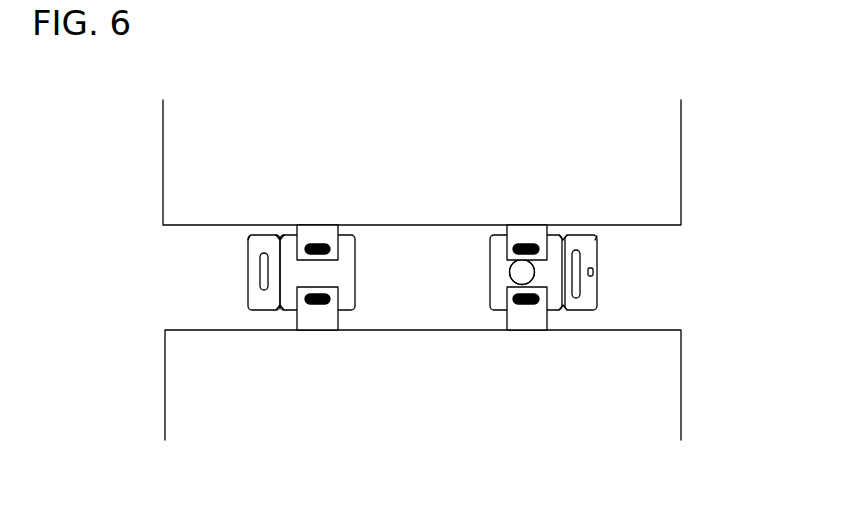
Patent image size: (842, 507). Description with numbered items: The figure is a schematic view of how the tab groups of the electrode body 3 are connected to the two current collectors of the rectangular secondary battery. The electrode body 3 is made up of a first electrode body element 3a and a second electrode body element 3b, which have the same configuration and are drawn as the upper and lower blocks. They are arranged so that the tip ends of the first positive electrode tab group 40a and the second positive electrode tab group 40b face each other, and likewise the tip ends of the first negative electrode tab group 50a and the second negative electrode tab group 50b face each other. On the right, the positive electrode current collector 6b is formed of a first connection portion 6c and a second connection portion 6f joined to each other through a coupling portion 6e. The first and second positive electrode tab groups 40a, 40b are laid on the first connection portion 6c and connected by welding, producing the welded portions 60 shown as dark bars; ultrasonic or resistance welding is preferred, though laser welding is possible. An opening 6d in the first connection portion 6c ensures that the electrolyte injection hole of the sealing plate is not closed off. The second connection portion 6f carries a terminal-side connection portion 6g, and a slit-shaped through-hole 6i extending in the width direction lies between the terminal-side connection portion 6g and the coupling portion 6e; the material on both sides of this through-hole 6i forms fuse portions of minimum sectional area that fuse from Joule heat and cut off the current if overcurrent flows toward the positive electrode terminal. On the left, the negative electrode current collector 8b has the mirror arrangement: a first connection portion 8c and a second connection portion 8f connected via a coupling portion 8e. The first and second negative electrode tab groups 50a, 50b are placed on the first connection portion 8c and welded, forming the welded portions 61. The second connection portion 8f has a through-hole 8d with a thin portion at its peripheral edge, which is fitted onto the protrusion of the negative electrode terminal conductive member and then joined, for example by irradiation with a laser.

The electrode body 3 is at (477, 270).
The first electrode body element 3a is at (645, 185).
The second electrode body element 3b is at (461, 385).
The negative electrode current collector 8b is at (244, 298).
The first connection portion 8c is at (330, 273).
The through-hole 8d is at (258, 272).
The coupling portion 8e is at (281, 240).
The second connection portion 8f is at (250, 242).
The first negative electrode tab group 50a is at (313, 235).
The second negative electrode tab group 50b is at (320, 316).
The welded portions 61 is at (320, 249).
The welded portions 60 is at (518, 248).
The first positive electrode tab group 40a is at (531, 238).
The second positive electrode tab group 40b is at (529, 318).
The positive electrode current collector 6b is at (607, 306).
The first connection portion 6c is at (520, 262).
The opening 6d is at (510, 270).
The coupling portion 6e is at (566, 240).
The second connection portion 6f is at (597, 240).
The terminal-side connection portion 6g is at (594, 262).
The through-hole 6i is at (597, 287).